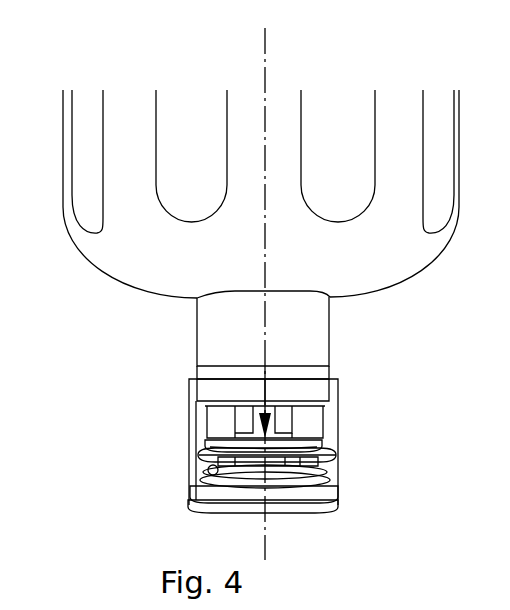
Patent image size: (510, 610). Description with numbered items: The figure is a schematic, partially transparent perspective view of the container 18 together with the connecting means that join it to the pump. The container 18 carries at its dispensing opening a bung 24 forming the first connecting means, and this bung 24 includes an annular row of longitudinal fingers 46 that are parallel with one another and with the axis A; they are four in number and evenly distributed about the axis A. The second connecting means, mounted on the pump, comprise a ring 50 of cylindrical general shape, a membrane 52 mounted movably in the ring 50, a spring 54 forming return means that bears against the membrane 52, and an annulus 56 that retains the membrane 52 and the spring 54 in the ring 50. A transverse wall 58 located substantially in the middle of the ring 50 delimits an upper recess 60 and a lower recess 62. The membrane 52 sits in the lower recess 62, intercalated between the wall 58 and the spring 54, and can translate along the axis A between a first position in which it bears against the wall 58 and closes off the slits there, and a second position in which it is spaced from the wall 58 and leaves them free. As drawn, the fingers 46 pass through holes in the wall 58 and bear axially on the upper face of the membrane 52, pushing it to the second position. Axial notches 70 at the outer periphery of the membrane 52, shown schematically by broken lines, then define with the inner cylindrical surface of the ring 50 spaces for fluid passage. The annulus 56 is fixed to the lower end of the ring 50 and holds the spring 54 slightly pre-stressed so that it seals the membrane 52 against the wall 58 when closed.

The axis A is at (265, 50).
The container 18 is at (418, 279).
The bung 24 is at (345, 360).
The longitudinal fingers 46 is at (212, 423).
The ring 50 is at (352, 382).
The membrane 52 is at (212, 458).
The spring 54 is at (326, 481).
The annulus 56 is at (327, 512).
The transverse wall 58 is at (323, 439).
The upper recess 60 is at (341, 410).
The lower recess 62 is at (336, 473).
The axial notches 70 is at (323, 450).